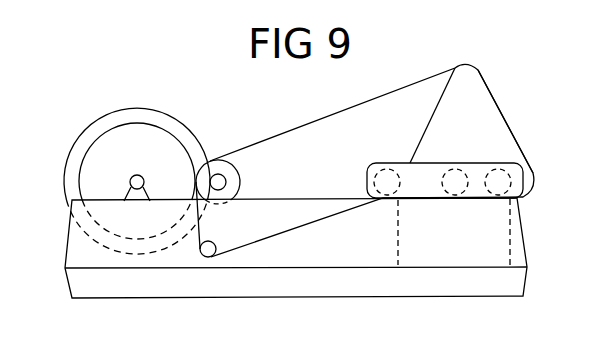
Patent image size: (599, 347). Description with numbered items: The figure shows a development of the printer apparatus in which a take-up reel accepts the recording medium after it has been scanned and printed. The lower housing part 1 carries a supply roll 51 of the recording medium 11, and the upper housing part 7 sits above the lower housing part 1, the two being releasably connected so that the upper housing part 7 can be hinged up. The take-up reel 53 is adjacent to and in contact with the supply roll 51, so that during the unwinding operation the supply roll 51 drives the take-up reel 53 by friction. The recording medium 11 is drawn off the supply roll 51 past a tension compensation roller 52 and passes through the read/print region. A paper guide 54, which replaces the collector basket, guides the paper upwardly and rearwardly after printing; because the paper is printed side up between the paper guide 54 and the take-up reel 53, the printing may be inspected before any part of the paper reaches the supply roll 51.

The lower housing part 1 is at (70, 248).
The upper housing part 7 is at (397, 162).
The recording medium 11 is at (312, 222).
The supply roll 51 is at (112, 118).
The tension compensation roller 52 is at (209, 258).
The take-up reel 53 is at (214, 160).
The paper guide 54 is at (487, 112).